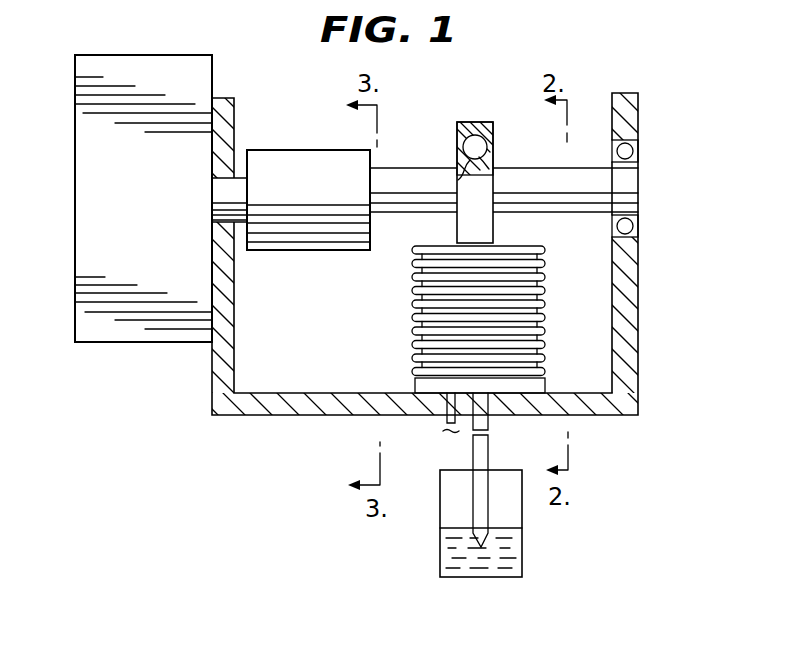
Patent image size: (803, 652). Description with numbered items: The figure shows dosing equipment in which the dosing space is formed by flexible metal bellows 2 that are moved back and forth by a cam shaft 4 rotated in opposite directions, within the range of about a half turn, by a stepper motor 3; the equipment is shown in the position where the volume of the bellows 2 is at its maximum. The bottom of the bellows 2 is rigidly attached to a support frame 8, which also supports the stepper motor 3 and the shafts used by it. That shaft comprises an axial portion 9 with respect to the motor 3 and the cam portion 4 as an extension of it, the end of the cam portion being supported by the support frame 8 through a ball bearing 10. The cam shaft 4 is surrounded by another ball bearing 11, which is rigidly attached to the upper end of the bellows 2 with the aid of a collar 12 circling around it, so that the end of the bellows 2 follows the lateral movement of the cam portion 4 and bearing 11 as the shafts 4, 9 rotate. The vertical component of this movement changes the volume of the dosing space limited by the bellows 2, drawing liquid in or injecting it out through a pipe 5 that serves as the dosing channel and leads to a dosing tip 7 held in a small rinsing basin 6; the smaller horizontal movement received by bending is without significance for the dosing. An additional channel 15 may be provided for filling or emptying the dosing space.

The flexible metal bellows 2 is at (412, 312).
The stepper motor 3 is at (122, 327).
The cam shaft 4 is at (423, 178).
The pipe 5 is at (484, 450).
The small rinsing basin 6 is at (512, 518).
The dosing tip 7 is at (478, 541).
The support frame 8 is at (634, 334).
The axial portion of shaft 9 is at (303, 158).
The ball bearing 10 is at (634, 153).
The ball bearing 11 is at (490, 140).
The collar 12 is at (495, 225).
The additional channel 15 is at (444, 432).